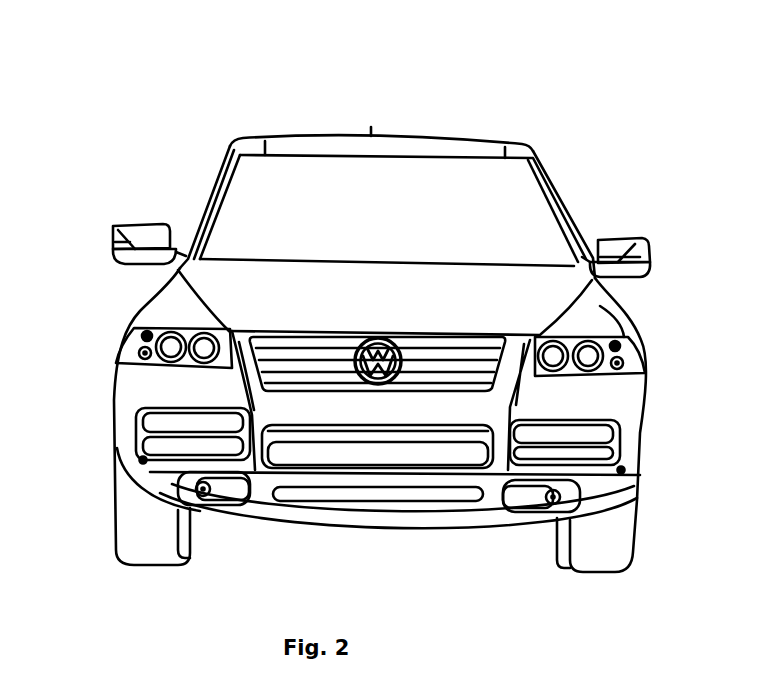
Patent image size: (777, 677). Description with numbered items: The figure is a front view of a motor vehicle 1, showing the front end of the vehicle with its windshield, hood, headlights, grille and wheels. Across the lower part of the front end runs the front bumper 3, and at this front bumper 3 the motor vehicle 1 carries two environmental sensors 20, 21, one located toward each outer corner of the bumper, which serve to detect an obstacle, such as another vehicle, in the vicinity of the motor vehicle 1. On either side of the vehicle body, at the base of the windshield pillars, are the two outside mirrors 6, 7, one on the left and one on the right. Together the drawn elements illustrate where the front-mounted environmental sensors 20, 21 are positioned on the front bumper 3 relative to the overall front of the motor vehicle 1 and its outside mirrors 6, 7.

The motor vehicle 1 is at (264, 110).
The front bumper 3 is at (132, 440).
The outside mirror 6 is at (130, 243).
The outside mirror 7 is at (648, 240).
The environmental sensor 20 is at (143, 462).
The environmental sensor 21 is at (621, 470).